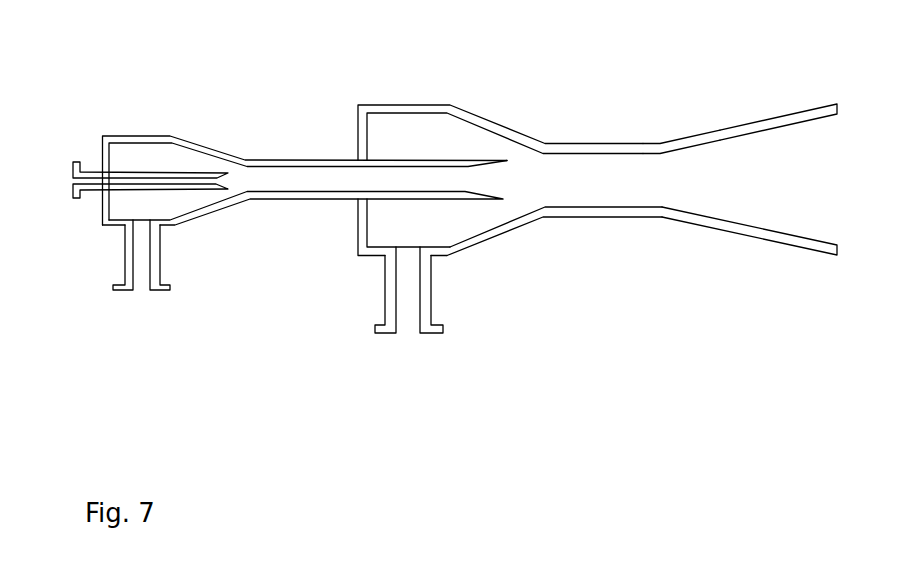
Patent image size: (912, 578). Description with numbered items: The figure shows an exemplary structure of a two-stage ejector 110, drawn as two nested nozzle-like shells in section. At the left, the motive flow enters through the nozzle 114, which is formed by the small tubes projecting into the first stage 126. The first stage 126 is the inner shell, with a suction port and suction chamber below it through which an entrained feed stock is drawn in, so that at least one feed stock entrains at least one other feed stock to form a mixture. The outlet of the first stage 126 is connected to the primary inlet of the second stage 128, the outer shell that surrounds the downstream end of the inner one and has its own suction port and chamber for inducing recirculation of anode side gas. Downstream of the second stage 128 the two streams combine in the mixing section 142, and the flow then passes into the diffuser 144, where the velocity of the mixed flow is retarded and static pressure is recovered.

The ejector 110 is at (651, 279).
The nozzle 114 is at (230, 188).
The first stage 126 is at (226, 112).
The second stage 128 is at (576, 105).
The mixing section 142 is at (547, 190).
The diffuser 144 is at (720, 173).